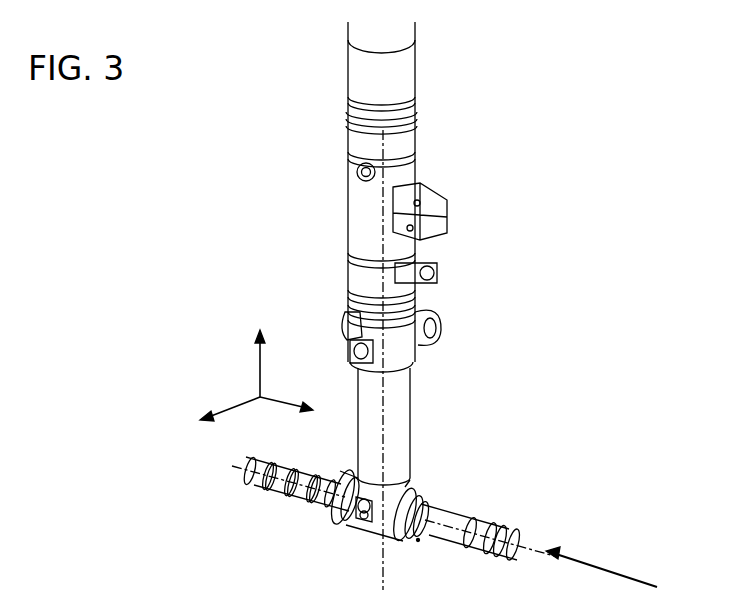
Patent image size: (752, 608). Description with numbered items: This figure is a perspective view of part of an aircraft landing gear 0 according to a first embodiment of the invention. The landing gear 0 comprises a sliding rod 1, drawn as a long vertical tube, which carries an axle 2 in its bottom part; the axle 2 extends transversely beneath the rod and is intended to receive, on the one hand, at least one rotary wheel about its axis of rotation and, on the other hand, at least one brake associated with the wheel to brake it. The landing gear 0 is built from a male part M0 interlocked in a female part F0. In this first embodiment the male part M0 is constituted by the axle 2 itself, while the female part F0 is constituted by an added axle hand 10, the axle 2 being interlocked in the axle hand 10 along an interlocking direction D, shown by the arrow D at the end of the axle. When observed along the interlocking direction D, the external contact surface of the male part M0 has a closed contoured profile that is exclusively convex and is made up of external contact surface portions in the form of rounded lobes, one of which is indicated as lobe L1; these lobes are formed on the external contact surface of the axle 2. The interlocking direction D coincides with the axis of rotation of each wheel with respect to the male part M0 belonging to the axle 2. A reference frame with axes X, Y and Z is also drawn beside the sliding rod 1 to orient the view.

The sliding rod 1 is at (383, 143).
The axle 2 is at (497, 533).
The axle hand 10 is at (422, 550).
The landing gear 0 is at (132, 277).
The female part F0 is at (432, 515).
The male part M0 is at (417, 540).
The rounded lobe L1 is at (418, 540).
The interlocking direction D is at (605, 572).
The X axis X is at (230, 405).
The Y axis Y is at (286, 395).
The Z axis Z is at (249, 359).